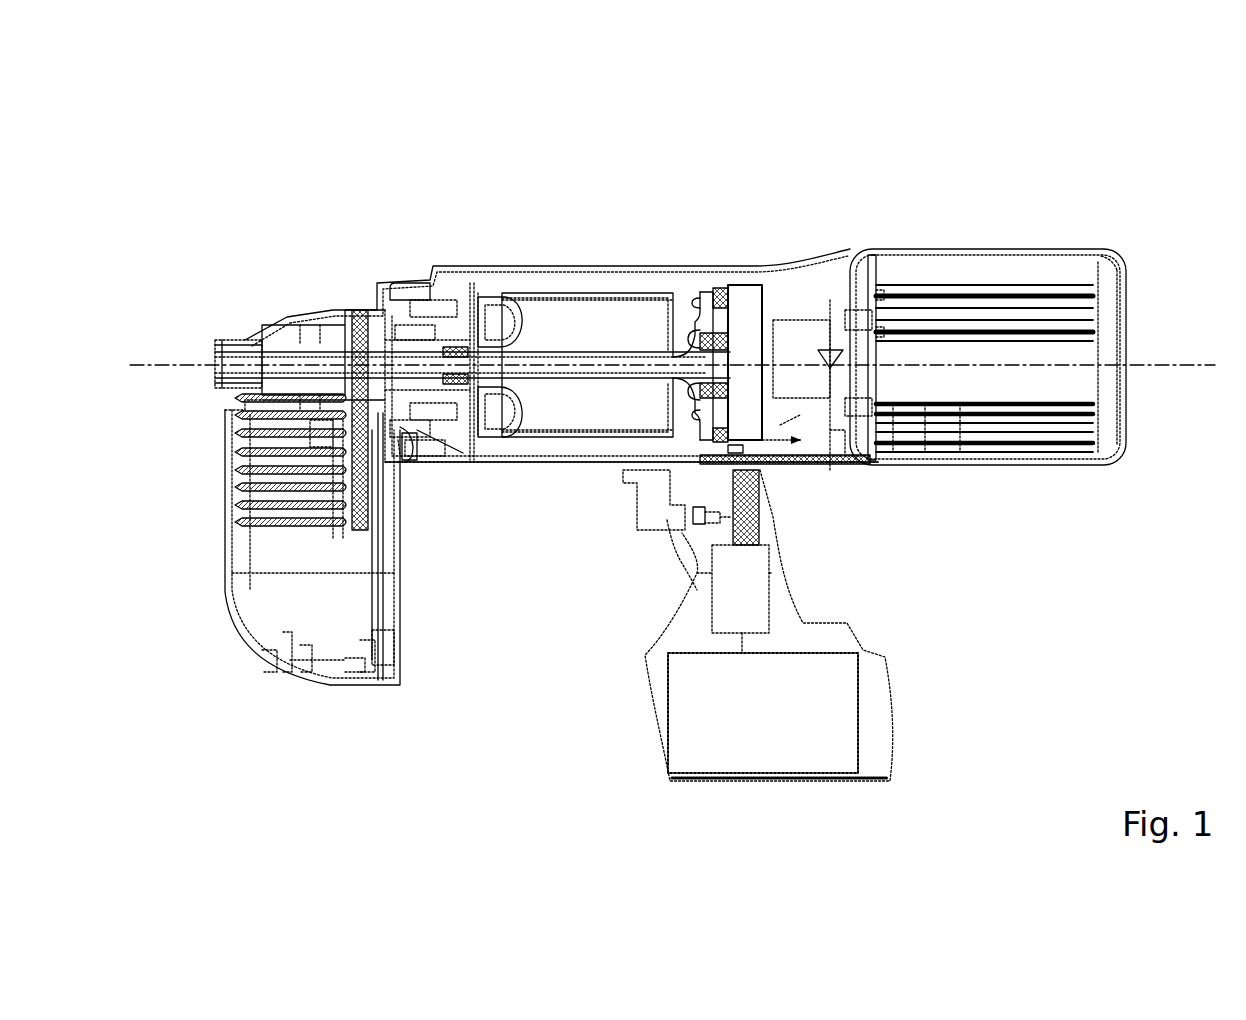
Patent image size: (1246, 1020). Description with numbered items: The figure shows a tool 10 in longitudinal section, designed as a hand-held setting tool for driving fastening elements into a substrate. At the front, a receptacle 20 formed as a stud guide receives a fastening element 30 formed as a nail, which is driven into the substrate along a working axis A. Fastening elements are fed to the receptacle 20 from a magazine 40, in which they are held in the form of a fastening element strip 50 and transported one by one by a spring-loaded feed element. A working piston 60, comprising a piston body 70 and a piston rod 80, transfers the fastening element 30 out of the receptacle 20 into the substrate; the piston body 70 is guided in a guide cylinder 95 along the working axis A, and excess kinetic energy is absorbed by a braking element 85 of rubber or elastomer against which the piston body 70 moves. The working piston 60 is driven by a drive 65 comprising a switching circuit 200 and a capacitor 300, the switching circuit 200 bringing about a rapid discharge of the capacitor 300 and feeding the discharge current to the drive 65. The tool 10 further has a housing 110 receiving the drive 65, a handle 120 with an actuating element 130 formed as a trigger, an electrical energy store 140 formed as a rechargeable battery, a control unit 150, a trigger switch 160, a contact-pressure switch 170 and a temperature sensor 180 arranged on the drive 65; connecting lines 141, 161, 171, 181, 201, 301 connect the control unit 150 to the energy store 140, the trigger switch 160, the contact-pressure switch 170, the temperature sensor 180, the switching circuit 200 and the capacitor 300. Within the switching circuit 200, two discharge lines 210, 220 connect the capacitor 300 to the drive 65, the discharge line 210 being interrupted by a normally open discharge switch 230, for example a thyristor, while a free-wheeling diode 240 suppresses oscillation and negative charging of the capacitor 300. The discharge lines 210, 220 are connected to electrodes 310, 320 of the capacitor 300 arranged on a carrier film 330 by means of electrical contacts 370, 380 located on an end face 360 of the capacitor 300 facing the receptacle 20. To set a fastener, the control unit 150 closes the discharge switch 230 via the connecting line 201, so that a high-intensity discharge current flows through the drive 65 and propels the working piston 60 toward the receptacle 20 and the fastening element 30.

The tool 10 is at (519, 270).
The receptacle 20 is at (233, 340).
The fastening element 30 is at (293, 335).
The magazine 40 is at (297, 548).
The fastening element strip 50 is at (360, 520).
The working piston 60 is at (628, 168).
The drive 65 is at (748, 342).
The piston body 70 is at (690, 335).
The piston rod 80 is at (592, 372).
The braking element 85 is at (500, 333).
The guide cylinder 95 is at (541, 293).
The housing 110 is at (1090, 258).
The handle 120 is at (700, 575).
The actuating element 130 is at (637, 476).
The electrical energy store 140 is at (703, 730).
The electrical connecting line 141 is at (742, 638).
The control unit 150 is at (733, 590).
The trigger switch 160 is at (657, 512).
The electrical connecting line 161 is at (700, 523).
The contact-pressure switch 170 is at (410, 455).
The electrical connecting line 171 is at (440, 455).
The temperature sensor 180 is at (772, 465).
The electrical connecting line 181 is at (742, 497).
The switching circuit 200 is at (835, 300).
The electrical connecting line 201 is at (805, 418).
The discharge line 210 is at (925, 415).
The discharge line 220 is at (852, 320).
The discharge switch 230 is at (833, 425).
The free-wheeling diode 240 is at (840, 362).
The capacitor 300 is at (1035, 270).
The electrical connecting line 301 is at (895, 412).
The electrode 310 is at (1098, 308).
The electrode 320 is at (855, 408).
The carrier film 330 is at (1105, 333).
The end face 360 is at (858, 318).
The electrical contact 370 is at (900, 293).
The electrical contact 380 is at (958, 420).
The working axis A is at (1155, 362).